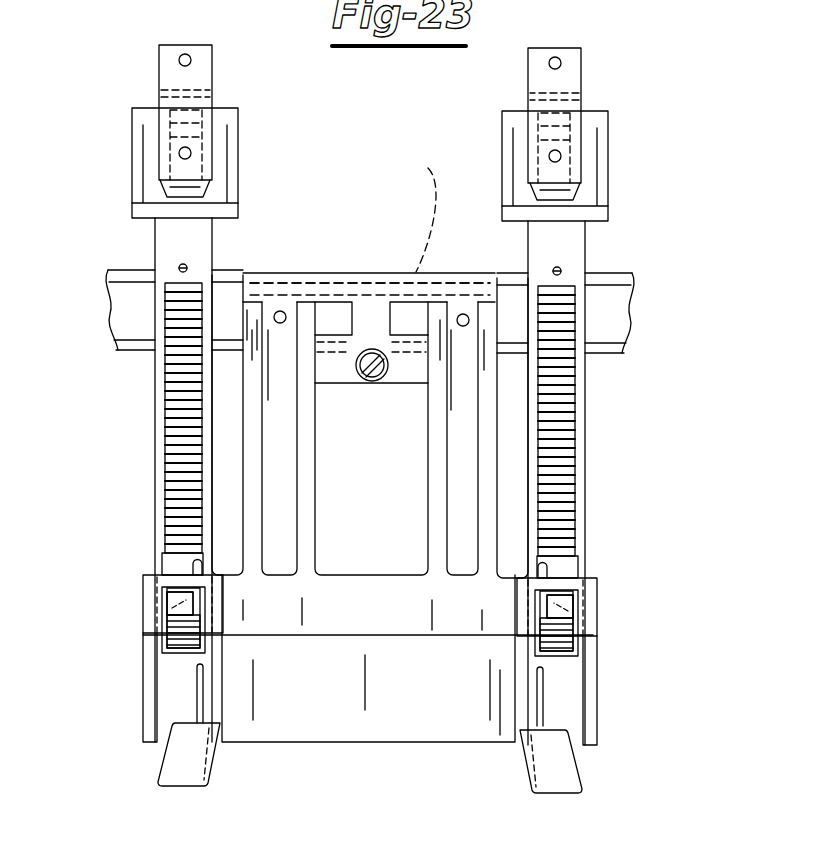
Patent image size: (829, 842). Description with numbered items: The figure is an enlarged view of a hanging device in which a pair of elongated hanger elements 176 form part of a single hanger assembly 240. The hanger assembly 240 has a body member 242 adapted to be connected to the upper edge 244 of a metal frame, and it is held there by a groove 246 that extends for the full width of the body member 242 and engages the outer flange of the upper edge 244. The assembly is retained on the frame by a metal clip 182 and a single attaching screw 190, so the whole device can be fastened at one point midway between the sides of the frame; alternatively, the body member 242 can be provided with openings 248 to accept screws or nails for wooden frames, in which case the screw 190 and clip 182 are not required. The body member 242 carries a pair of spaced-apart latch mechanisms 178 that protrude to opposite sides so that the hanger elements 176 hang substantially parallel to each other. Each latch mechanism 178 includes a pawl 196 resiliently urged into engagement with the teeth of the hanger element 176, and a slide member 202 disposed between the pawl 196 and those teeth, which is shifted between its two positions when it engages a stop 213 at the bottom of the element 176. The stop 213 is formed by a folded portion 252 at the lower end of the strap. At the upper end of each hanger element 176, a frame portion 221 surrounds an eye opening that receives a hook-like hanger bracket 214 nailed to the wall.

The elongated hanger element 176 is at (213, 249).
The latch mechanism 178 is at (146, 622).
The metal clip 182 is at (422, 386).
The screw 190 is at (378, 378).
The pawl 196 is at (180, 592).
The slide member 202 is at (165, 647).
The stop 213 is at (216, 724).
The hanger bracket 214 is at (205, 71).
The frame portion 221 is at (238, 130).
The hanger assembly 240 is at (368, 463).
The body member 242 is at (306, 292).
The upper edge of metal frame 244 is at (612, 312).
The groove 246 is at (410, 208).
The openings 248 is at (281, 311).
The folded portion 252 is at (178, 759).